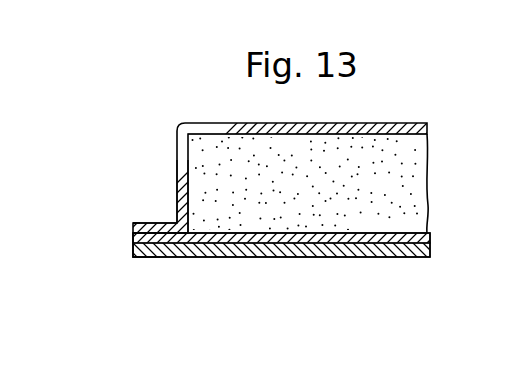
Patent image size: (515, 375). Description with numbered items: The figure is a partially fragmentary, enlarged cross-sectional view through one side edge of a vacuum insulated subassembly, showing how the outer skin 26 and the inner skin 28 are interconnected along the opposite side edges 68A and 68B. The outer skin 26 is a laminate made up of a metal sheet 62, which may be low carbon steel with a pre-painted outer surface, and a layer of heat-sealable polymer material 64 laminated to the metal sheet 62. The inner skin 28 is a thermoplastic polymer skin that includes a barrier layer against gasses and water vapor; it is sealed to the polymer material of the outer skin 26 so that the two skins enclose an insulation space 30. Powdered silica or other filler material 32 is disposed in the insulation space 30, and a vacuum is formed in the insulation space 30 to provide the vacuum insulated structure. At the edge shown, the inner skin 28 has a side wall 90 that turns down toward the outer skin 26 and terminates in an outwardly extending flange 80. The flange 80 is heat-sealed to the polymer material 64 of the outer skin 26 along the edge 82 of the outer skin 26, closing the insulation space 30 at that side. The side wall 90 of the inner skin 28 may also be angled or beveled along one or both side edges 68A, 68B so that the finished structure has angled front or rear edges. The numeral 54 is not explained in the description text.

The outer skin 26 is at (335, 257).
The inner skin 28 is at (372, 122).
The insulation space 30 is at (417, 153).
The filler material 32 is at (415, 190).
The assembly 54 is at (13, 13).
The metal sheet 62 is at (410, 257).
The heat-sealable polymer material 64 is at (412, 233).
The side edge 68A is at (129, 219).
The side edge 68B is at (129, 216).
The flange 80 is at (148, 223).
The edge of outer skin 82 is at (148, 257).
The side wall 90 is at (177, 172).